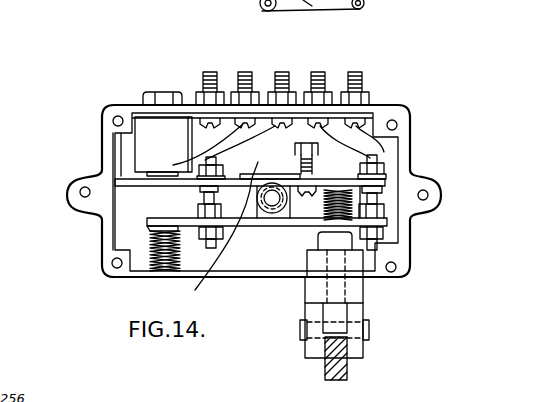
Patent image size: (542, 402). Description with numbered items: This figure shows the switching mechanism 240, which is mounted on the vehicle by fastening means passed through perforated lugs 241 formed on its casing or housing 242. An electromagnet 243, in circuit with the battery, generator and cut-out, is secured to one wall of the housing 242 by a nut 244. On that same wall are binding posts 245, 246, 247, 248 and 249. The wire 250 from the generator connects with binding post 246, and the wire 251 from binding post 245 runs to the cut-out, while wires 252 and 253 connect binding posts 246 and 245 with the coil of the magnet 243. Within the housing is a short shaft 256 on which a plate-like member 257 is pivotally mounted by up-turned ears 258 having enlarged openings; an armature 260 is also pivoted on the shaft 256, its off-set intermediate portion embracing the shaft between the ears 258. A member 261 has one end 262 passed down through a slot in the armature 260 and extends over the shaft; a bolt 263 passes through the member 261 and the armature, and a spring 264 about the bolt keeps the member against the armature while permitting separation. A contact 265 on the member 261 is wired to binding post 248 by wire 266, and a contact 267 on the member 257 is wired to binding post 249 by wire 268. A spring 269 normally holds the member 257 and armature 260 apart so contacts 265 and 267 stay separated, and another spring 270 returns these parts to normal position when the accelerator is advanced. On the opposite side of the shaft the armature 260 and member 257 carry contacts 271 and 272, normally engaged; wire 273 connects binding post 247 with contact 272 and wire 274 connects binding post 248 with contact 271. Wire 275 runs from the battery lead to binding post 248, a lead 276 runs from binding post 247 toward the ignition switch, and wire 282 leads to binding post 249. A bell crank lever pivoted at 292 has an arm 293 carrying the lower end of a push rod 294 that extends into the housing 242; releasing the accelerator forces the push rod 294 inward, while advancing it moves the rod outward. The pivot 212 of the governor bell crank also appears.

The pivot 212 is at (257, 6).
The switching mechanism 240 is at (79, 225).
The perforated lugs 241 is at (78, 181).
The housing 242 is at (107, 240).
The electromagnet 243 is at (143, 143).
The nut 244 is at (157, 92).
The binding post 245 is at (214, 72).
The binding post 246 is at (249, 70).
The binding post 247 is at (286, 70).
The binding post 248 is at (324, 70).
The binding post 249 is at (362, 73).
The wire 250 is at (243, 62).
The wire 251 is at (212, 70).
The wire 252 is at (191, 145).
The wire 253 is at (180, 125).
The short shaft 256 is at (272, 203).
The plate-like member 257 is at (147, 222).
The up-turned ears 258 is at (284, 232).
The armature 260 is at (128, 182).
The member 261 is at (386, 180).
The end of member 262 is at (244, 243).
The bolt 263 is at (326, 142).
The spring 264 is at (313, 163).
The contact 265 is at (376, 190).
The wire 266 is at (338, 143).
The contact 267 is at (372, 252).
The wire 268 is at (384, 153).
The spring 269 is at (322, 224).
The spring 270 is at (137, 278).
The contact 271 is at (200, 190).
The contact 272 is at (204, 199).
The wire 273 is at (194, 285).
The wire 274 is at (260, 170).
The wire 275 is at (320, 72).
The lead 276 is at (280, 72).
The wire 282 is at (353, 72).
The pivot 292 is at (369, 330).
The arm 293 is at (349, 368).
The push rod 294 is at (332, 312).